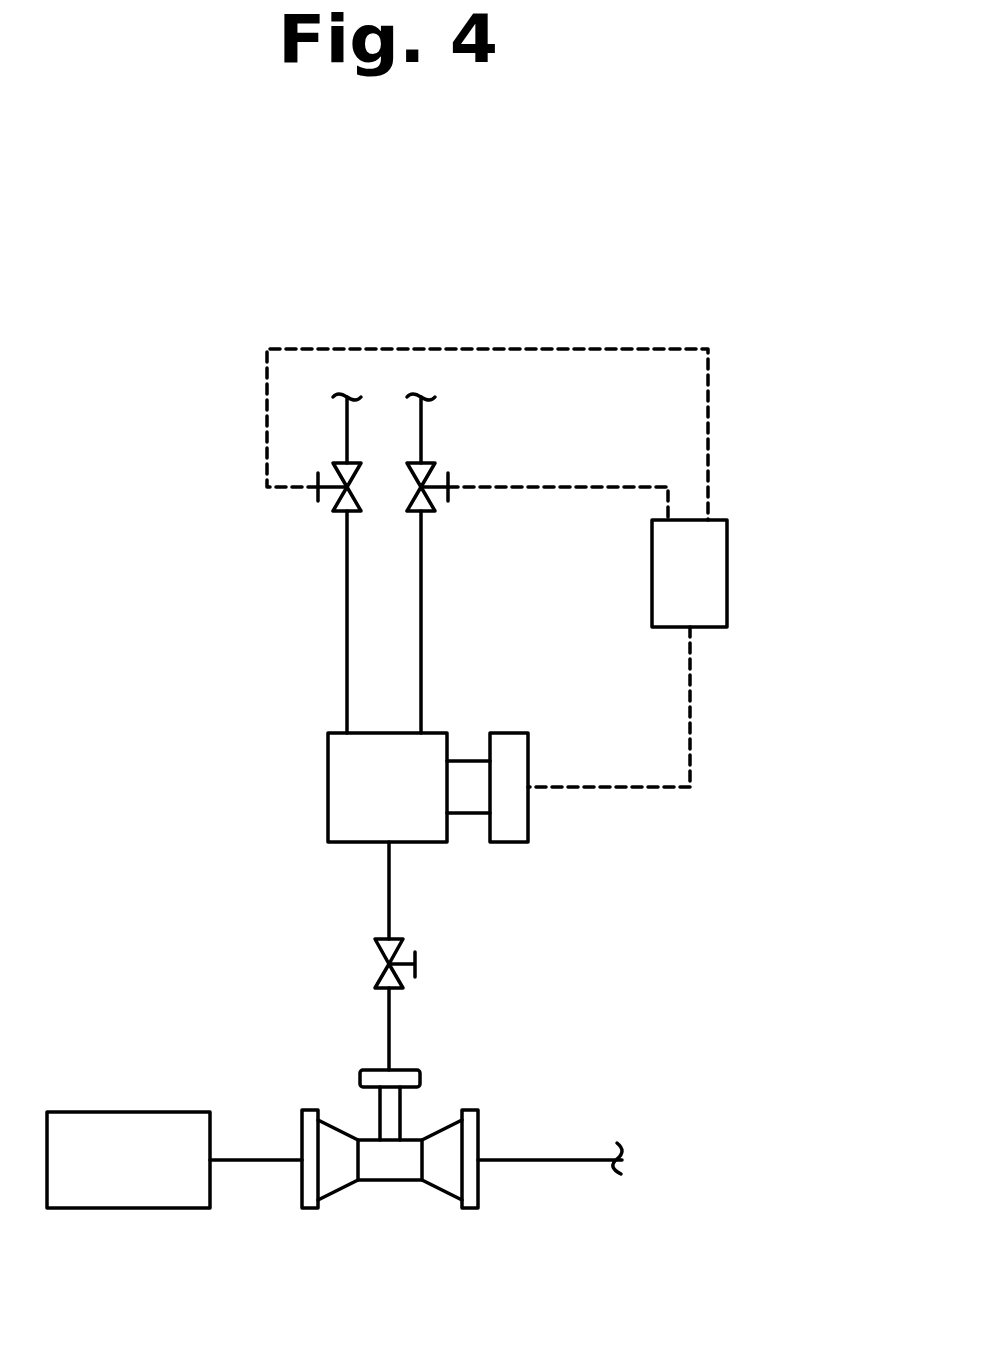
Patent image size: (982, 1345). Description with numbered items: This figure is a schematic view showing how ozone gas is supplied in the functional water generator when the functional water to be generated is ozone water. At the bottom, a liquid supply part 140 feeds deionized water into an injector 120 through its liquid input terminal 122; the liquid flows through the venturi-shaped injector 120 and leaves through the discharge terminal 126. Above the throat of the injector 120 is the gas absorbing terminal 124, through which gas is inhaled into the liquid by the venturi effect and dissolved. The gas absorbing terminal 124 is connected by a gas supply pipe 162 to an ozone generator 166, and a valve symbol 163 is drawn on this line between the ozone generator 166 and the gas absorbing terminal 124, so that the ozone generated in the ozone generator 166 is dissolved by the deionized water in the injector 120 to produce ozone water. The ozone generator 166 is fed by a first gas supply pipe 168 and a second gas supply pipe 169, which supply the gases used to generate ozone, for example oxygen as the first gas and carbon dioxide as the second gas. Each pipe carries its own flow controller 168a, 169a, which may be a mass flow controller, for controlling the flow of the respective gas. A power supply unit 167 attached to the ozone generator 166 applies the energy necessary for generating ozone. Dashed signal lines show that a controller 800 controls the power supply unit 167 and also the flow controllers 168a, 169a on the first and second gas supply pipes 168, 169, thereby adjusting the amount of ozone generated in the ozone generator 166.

The injector 120 is at (397, 1228).
The liquid input terminal 122 is at (312, 1208).
The gas absorbing terminal 124 is at (420, 1078).
The discharge terminal 126 is at (450, 1182).
The liquid supply part 140 is at (128, 1112).
The gas supply pipe 162 is at (389, 888).
The valve 163 is at (418, 964).
The ozone generator 166 is at (328, 787).
The power supply unit 167 is at (530, 750).
The first gas supply pipe 168 is at (347, 623).
The flow controller 168a is at (318, 495).
The second gas supply pipe 169 is at (424, 623).
The flow controller 169a is at (448, 495).
The controller 800 is at (727, 571).